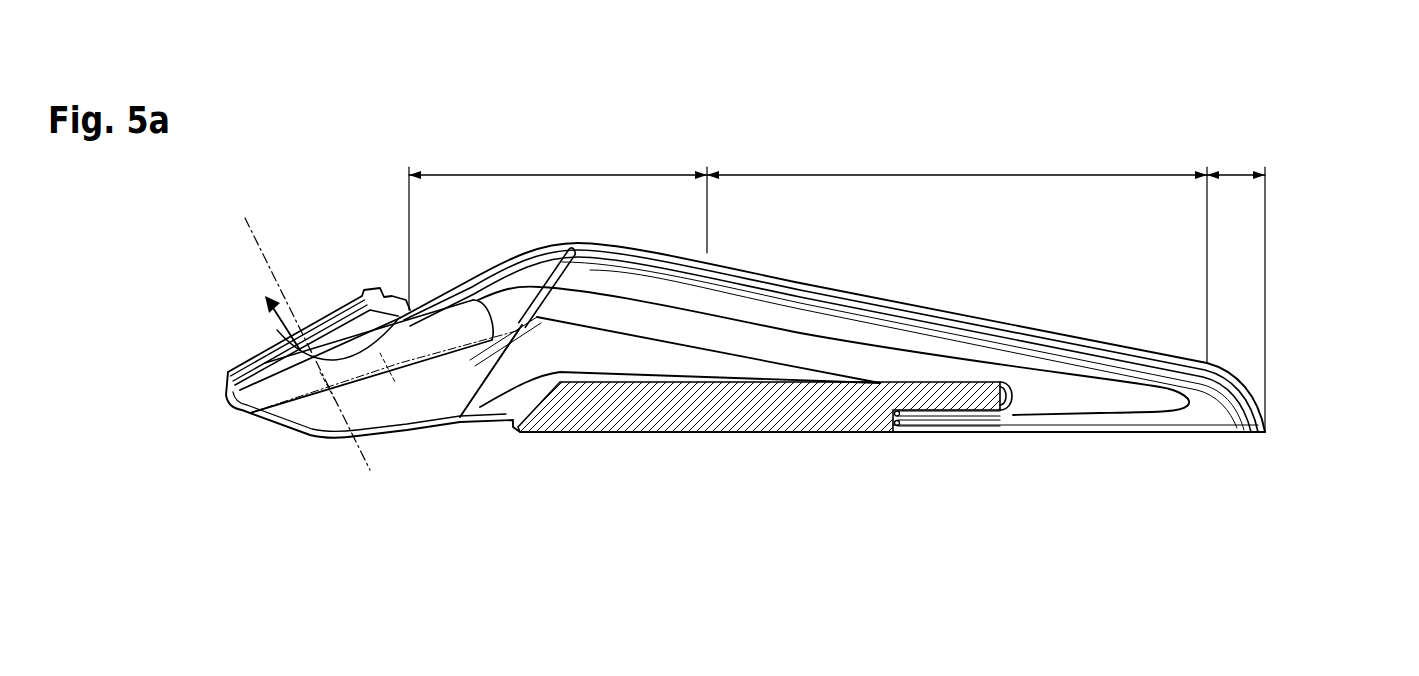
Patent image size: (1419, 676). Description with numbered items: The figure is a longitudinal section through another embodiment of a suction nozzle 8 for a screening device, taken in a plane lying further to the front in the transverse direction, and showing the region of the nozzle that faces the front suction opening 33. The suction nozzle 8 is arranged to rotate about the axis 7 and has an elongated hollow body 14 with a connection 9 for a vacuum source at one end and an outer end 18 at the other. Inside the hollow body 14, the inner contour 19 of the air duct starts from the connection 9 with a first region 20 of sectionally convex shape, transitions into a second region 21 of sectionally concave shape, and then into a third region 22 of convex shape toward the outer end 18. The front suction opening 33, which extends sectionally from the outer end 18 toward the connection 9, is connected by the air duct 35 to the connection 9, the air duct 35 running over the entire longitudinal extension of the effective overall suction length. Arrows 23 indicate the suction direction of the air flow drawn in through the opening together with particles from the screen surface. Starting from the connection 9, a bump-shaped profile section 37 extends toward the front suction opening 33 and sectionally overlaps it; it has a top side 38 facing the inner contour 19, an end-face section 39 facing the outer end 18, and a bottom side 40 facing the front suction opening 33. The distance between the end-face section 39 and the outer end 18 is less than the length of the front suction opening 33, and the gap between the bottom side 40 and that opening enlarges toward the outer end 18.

The axis 7 is at (245, 222).
The suction nozzle 8 is at (1314, 298).
The connection 9 is at (328, 318).
The hollow body 14 is at (1079, 342).
The outer end 18 is at (1267, 430).
The inner contour 19 is at (763, 287).
The first region 20 is at (560, 172).
The second region 21 is at (900, 172).
The third region 22 is at (1234, 172).
The arrows 23 is at (917, 430).
The front suction opening 33 is at (1178, 441).
The air duct 35 is at (692, 321).
The bump-shaped profile section 37 is at (620, 398).
The top side 38 is at (930, 382).
The end-face section 39 is at (1013, 400).
The bottom side 40 is at (980, 428).